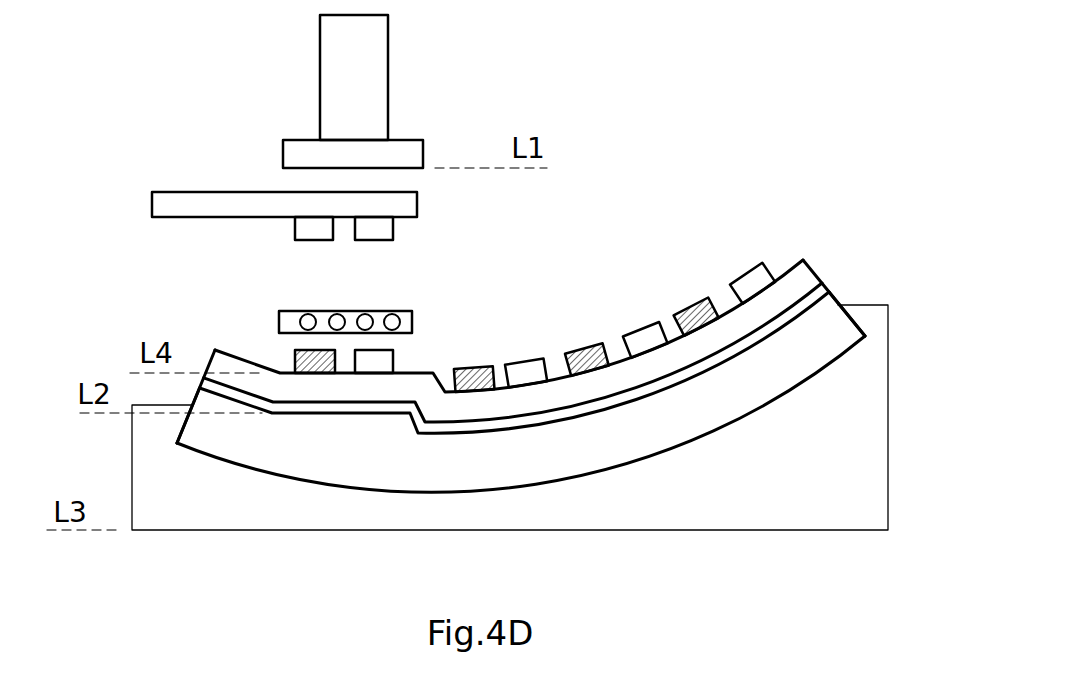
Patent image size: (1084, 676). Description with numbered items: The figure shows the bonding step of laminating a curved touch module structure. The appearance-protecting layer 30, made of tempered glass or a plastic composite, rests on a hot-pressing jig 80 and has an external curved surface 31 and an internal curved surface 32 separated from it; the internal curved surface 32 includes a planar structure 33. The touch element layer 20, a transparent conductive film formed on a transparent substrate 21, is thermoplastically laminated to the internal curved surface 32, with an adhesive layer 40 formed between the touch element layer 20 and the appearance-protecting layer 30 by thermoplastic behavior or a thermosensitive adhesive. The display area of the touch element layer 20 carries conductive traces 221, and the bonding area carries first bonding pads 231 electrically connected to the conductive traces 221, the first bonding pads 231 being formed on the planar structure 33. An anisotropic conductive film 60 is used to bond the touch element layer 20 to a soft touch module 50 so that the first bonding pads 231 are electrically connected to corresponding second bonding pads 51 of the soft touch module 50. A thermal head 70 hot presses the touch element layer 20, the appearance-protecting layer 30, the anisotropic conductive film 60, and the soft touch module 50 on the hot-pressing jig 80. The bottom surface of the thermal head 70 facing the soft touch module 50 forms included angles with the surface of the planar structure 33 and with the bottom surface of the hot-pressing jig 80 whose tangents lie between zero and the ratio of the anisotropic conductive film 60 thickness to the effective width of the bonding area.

The touch element layer 20 is at (196, 335).
The transparent substrate 21 is at (802, 283).
The conductive traces 221 is at (772, 276).
The first bonding pads 231 is at (293, 357).
The appearance-protecting layer 30 is at (855, 320).
The external curved surface 31 is at (183, 447).
The internal curved surface 32 is at (788, 320).
The planar structure 33 is at (340, 413).
The adhesive layer 40 is at (810, 285).
The soft touch module 50 is at (187, 198).
The second bonding pads 51 is at (392, 230).
The anisotropic conductive film 60 is at (412, 321).
The thermal head 70 is at (388, 77).
The hot-pressing jig 80 is at (198, 528).